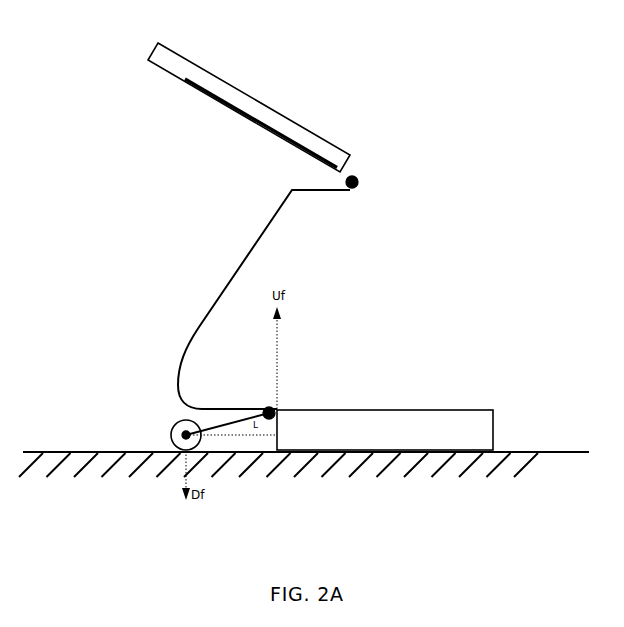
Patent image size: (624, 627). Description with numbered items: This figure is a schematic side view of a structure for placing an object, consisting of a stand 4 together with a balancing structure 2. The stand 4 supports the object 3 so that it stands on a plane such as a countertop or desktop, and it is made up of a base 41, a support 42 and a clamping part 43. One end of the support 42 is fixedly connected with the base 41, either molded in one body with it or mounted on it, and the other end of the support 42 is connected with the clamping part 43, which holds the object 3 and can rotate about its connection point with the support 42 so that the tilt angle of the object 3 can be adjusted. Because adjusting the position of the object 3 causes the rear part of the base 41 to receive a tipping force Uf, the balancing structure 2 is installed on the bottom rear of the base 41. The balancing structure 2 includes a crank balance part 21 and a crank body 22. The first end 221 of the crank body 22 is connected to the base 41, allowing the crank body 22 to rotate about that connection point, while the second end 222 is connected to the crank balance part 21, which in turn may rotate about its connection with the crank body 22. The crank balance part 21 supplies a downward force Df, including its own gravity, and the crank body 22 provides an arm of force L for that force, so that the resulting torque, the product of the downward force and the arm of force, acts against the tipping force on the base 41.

The balancing structure 2 is at (304, 470).
The crank balance part 21 is at (160, 470).
The crank body 22 is at (316, 454).
The first end 221 is at (272, 408).
The second end 222 is at (172, 429).
The object 3 is at (249, 104).
The stand 4 is at (304, 313).
The base 41 is at (392, 415).
The support 42 is at (270, 230).
The clamping part 43 is at (268, 133).